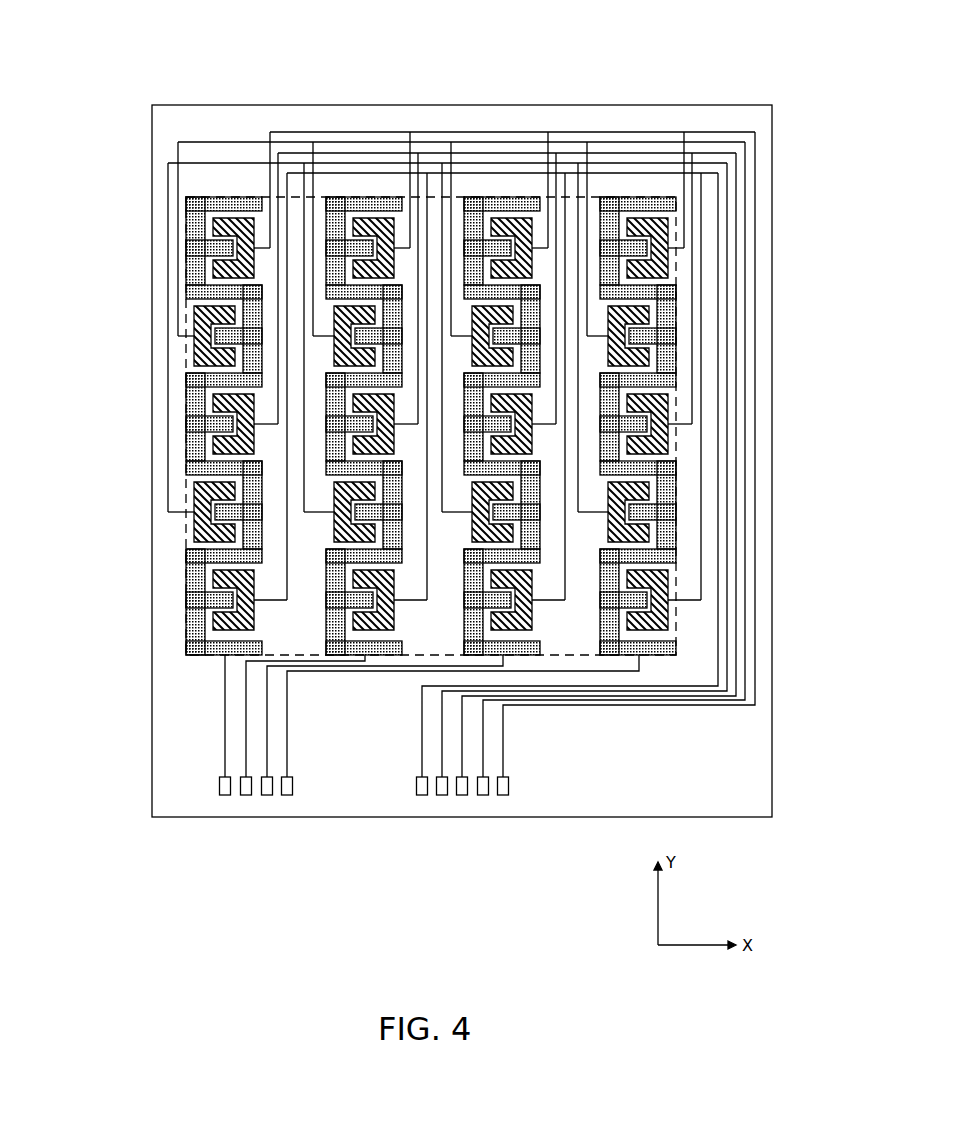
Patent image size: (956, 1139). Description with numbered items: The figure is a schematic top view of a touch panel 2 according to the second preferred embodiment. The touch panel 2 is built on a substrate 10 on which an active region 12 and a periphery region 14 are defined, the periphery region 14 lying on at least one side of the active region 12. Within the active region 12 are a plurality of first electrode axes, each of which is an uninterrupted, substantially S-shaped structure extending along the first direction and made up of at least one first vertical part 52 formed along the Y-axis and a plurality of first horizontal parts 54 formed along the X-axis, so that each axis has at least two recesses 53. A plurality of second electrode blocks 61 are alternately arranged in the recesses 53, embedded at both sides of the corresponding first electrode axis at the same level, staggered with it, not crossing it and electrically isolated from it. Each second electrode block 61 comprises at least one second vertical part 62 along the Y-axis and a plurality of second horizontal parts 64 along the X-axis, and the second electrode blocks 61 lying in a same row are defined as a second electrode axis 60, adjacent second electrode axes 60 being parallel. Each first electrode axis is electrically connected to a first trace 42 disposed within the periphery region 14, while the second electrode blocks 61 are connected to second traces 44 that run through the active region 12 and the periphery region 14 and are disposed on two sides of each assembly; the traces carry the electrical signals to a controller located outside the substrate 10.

The touch panel 2 is at (158, 64).
The substrate 10 is at (752, 104).
The active region 12 is at (184, 602).
The periphery region 14 is at (329, 795).
The first traces 42 is at (225, 718).
The second traces 44 is at (757, 287).
The first vertical part 52 is at (173, 241).
The recesses 53 is at (170, 336).
The first horizontal part 54 is at (188, 197).
The second electrode axis 60 is at (248, 62).
The second electrode blocks 61 is at (250, 222).
The second vertical part 62 is at (188, 462).
The second horizontal part 64 is at (184, 465).